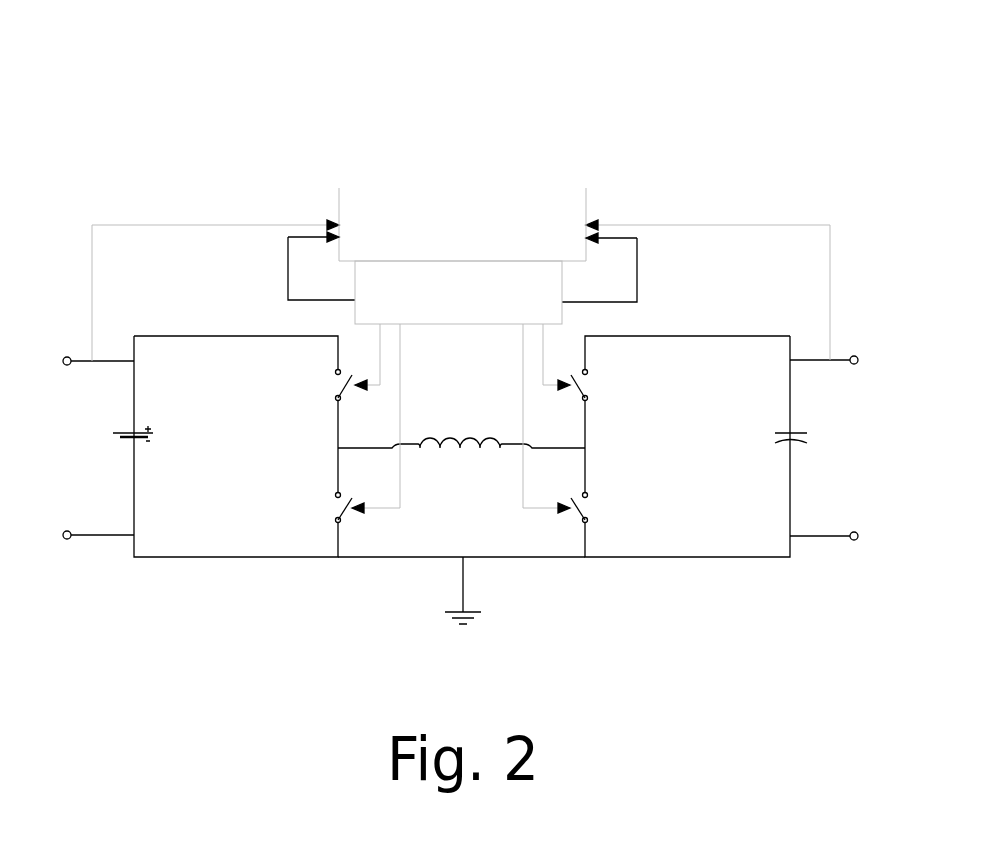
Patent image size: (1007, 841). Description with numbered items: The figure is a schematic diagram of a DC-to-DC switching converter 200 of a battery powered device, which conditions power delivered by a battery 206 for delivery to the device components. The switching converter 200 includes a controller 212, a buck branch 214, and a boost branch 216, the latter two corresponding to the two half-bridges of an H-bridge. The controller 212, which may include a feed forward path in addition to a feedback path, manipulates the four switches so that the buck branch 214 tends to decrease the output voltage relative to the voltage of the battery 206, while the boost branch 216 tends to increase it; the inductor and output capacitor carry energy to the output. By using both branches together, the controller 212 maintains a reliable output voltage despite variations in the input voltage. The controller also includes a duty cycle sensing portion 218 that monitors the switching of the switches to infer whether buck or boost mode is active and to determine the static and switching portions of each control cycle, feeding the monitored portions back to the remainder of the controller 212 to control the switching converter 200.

The switching converter 200 is at (517, 62).
The battery 206 is at (128, 462).
The controller 212 is at (528, 190).
The buck branch 214 is at (314, 575).
The boost branch 216 is at (603, 580).
The duty cycle sensing portion 218 is at (503, 324).